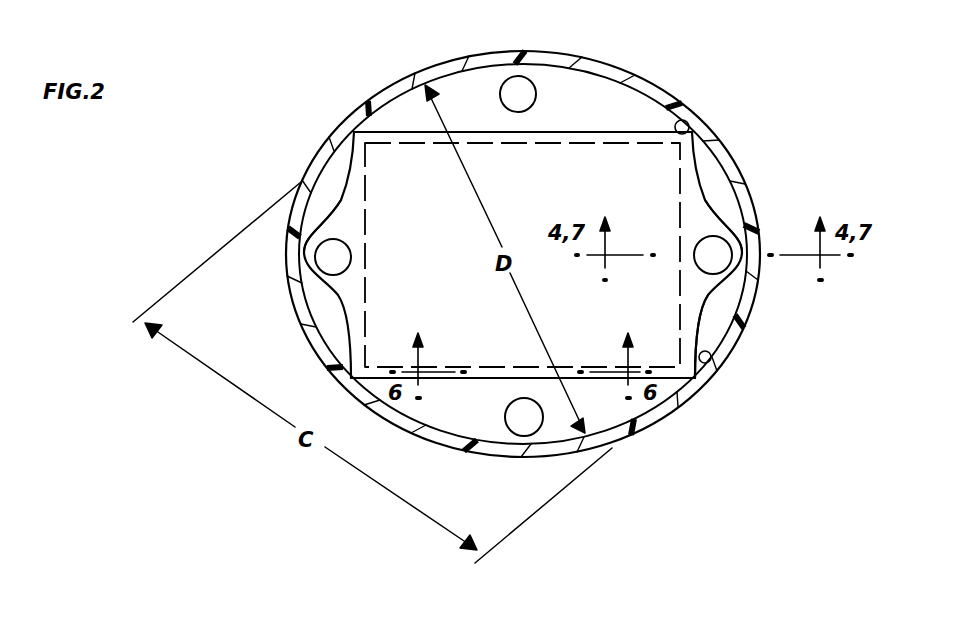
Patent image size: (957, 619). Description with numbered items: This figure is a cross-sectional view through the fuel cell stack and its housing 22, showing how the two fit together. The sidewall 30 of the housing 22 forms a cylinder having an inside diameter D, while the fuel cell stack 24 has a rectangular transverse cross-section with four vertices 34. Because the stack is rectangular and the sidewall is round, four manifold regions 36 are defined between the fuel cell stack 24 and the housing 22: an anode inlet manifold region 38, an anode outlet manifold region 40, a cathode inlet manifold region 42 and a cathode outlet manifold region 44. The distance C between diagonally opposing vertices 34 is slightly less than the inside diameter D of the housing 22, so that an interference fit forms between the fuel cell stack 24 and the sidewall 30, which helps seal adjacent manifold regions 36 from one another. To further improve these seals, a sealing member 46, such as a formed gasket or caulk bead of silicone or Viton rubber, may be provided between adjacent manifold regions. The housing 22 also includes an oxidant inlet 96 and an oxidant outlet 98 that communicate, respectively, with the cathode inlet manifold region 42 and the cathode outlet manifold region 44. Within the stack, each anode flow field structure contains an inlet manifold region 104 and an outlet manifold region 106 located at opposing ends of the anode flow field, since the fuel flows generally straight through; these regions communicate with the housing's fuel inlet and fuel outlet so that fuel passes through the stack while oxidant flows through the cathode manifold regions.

The housing 22 is at (365, 102).
The fuel cell stack 24 is at (452, 382).
The sidewall 30 is at (317, 153).
The vertices 34 is at (682, 128).
The manifold regions 36 is at (595, 117).
The anode inlet manifold region 38 is at (320, 207).
The anode outlet manifold region 40 is at (720, 318).
The cathode inlet manifold region 42 is at (615, 412).
The cathode outlet manifold region 44 is at (407, 107).
The sealing member 46 is at (718, 362).
The oxidant inlet 96 is at (533, 436).
The oxidant outlet 98 is at (536, 88).
The inlet manifold region 104 is at (292, 298).
The outlet manifold region 106 is at (705, 198).